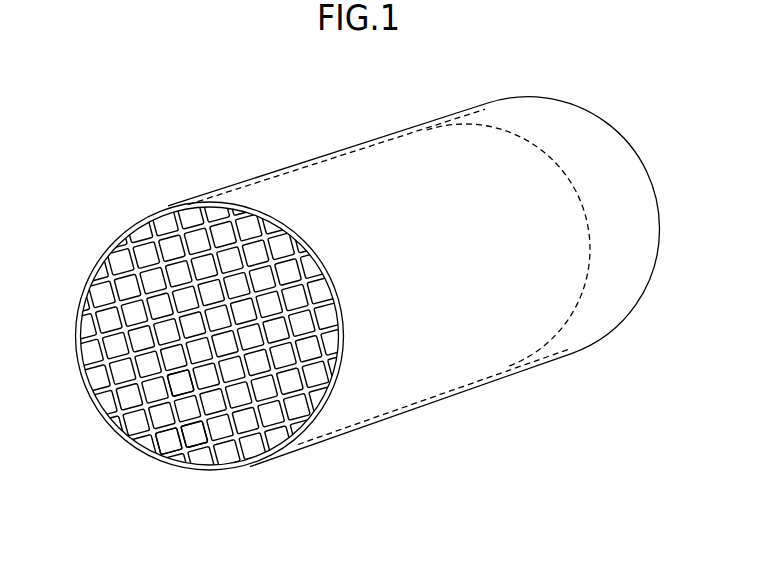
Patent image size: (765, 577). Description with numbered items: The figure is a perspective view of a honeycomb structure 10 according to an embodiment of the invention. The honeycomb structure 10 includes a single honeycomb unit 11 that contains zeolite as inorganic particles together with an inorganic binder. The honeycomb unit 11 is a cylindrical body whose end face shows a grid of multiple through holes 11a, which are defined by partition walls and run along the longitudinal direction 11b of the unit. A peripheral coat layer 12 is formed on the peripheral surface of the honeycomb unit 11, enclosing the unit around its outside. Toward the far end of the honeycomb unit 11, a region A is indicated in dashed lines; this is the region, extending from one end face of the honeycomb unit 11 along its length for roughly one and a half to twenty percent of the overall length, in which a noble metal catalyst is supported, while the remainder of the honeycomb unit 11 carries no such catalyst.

The honeycomb structure 10 is at (312, 155).
The honeycomb unit 11 is at (301, 436).
The through holes 11a is at (178, 388).
The longitudinal direction 11b is at (182, 437).
The peripheral coat layer 12 is at (133, 227).
The region A is at (585, 322).